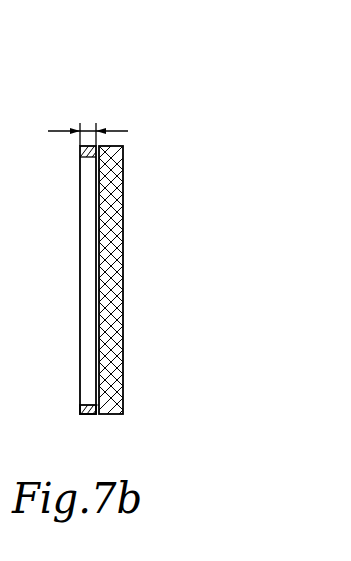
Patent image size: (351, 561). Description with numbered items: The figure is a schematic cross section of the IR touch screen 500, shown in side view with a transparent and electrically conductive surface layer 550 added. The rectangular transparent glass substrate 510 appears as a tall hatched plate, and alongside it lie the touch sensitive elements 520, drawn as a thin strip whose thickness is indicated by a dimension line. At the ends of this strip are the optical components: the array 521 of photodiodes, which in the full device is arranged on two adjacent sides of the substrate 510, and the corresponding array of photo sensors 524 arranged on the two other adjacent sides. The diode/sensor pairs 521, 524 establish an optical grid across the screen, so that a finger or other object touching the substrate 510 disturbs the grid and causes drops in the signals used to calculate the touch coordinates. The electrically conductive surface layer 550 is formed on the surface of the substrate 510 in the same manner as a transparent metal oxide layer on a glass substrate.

The IR touch screen 500 is at (143, 97).
The transparent substrate 510 is at (117, 285).
The touch sensitive elements 520 is at (90, 128).
The array of photodiodes 521 is at (86, 149).
The array of photo sensors 524 is at (83, 410).
The electrically conductive surface layer 550 is at (97, 415).